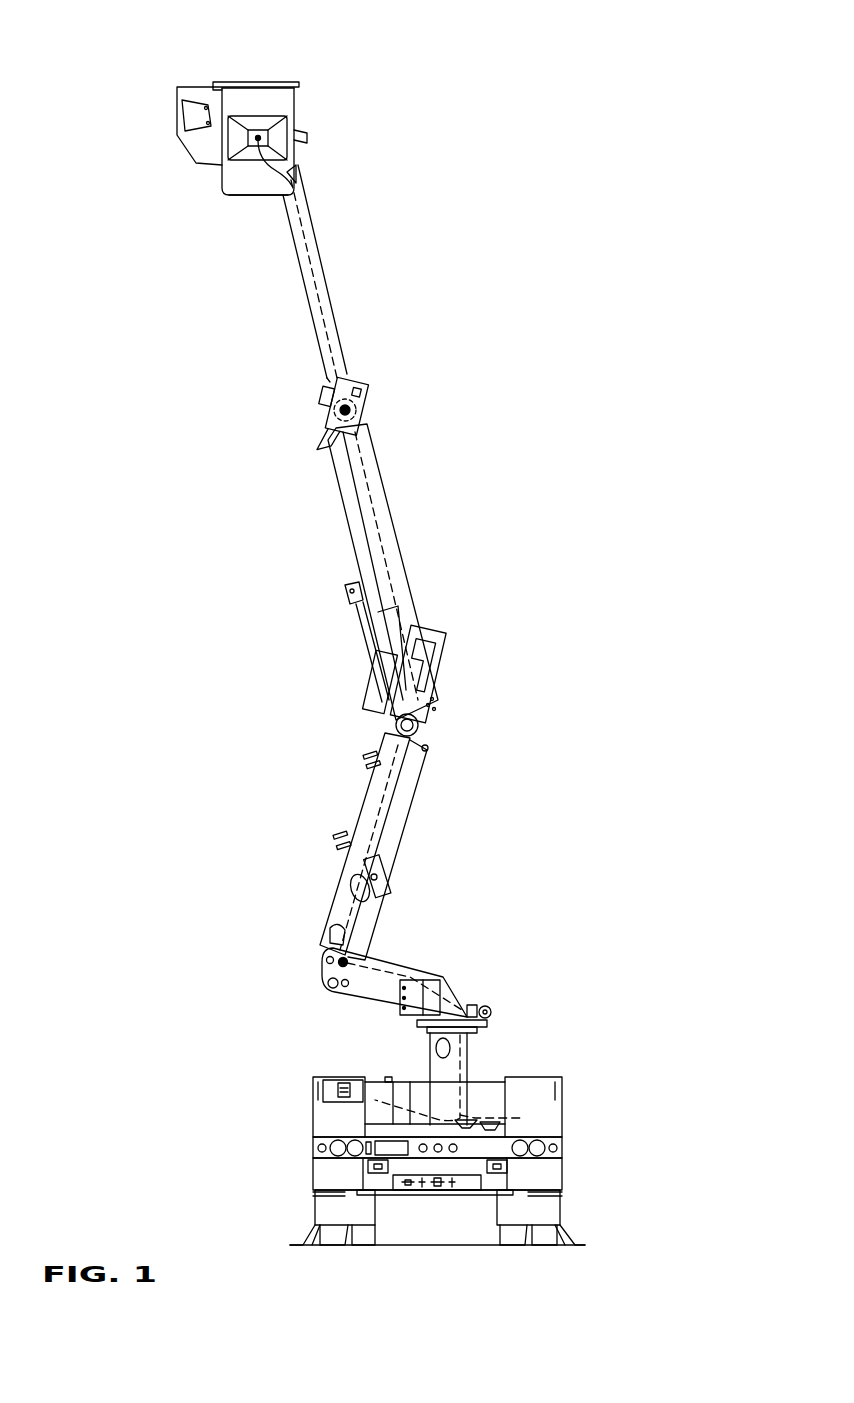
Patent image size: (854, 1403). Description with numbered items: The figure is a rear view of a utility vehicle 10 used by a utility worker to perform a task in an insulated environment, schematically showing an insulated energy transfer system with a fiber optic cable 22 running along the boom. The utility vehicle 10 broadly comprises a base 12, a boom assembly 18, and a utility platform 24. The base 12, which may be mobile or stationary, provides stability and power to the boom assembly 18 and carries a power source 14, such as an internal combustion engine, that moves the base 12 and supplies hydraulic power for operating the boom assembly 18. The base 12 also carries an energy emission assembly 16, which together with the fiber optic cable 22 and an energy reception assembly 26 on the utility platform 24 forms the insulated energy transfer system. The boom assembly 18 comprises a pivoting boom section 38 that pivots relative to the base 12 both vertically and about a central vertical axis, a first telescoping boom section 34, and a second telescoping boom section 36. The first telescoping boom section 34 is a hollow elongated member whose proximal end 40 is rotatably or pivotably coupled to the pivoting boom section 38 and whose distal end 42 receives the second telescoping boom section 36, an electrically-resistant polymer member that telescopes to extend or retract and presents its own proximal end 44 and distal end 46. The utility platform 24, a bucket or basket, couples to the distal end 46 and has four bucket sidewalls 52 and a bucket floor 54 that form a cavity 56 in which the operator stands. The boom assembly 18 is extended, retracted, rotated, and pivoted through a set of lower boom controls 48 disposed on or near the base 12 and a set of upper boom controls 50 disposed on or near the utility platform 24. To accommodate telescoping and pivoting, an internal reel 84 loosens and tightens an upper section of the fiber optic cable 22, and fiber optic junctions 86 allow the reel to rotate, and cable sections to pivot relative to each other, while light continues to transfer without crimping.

The utility vehicle 10 is at (625, 262).
The base 12 is at (682, 1072).
The power source 14 is at (437, 1246).
The energy emission assembly 16 is at (300, 1107).
The boom assembly 18 is at (540, 565).
The fiber optic cable 22 is at (300, 165).
The utility platform 24 is at (326, 72).
The energy reception assembly 26 is at (283, 135).
The first telescoping boom section 34 is at (393, 520).
The second telescoping boom section 36 is at (302, 290).
The pivoting boom section 38 is at (378, 806).
The proximal end 40 is at (437, 690).
The distal end 42 is at (378, 400).
The proximal end 44 is at (318, 372).
The distal end 46 is at (272, 231).
The set of lower boom controls 48 is at (486, 1112).
The set of upper boom controls 50 is at (200, 76).
The bucket sidewalls 52 is at (263, 100).
The bucket floor 54 is at (230, 196).
The cavity 56 is at (245, 72).
The internal reel 84 is at (343, 410).
The fiber optic junction 86 is at (424, 720).